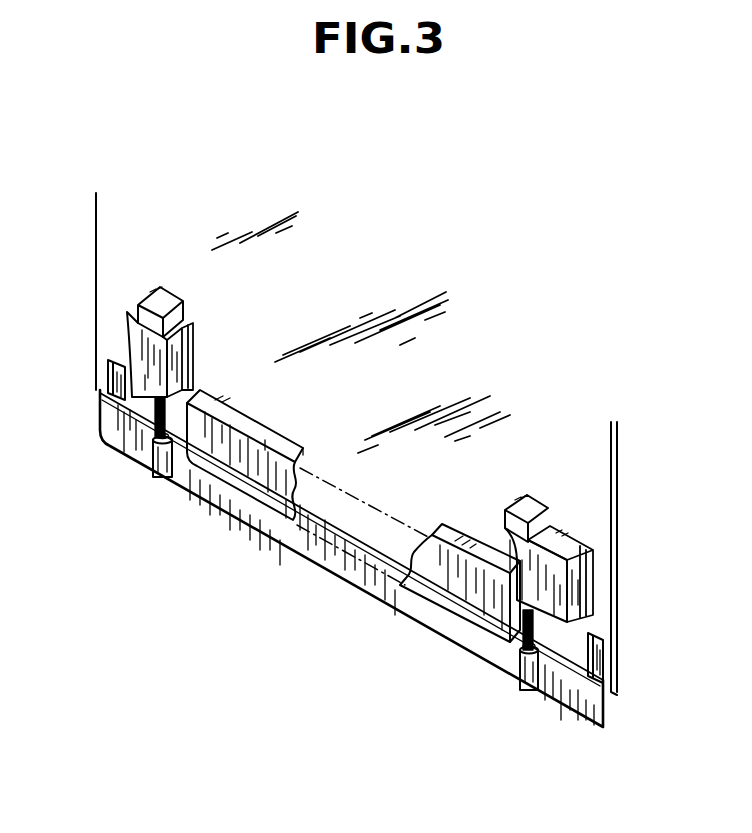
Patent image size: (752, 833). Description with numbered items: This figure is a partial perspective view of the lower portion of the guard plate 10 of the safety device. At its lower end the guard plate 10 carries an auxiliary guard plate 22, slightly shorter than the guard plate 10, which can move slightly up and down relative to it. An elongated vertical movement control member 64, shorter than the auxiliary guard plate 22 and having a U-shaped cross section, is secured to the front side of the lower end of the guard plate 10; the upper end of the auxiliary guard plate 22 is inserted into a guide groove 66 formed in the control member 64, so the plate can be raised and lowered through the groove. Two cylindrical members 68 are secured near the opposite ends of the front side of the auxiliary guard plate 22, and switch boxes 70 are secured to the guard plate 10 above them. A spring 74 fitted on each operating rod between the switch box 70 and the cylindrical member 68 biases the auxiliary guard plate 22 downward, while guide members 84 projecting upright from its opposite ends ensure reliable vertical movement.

The guard plate 10 is at (605, 587).
The auxiliary guard plate 22 is at (427, 615).
The vertical movement control member 64 is at (227, 465).
The guide groove 66 is at (463, 640).
The cylindrical member 68 is at (161, 480).
The switch box 70 is at (133, 343).
The spring 74 is at (150, 422).
The guide member 84 is at (106, 392).